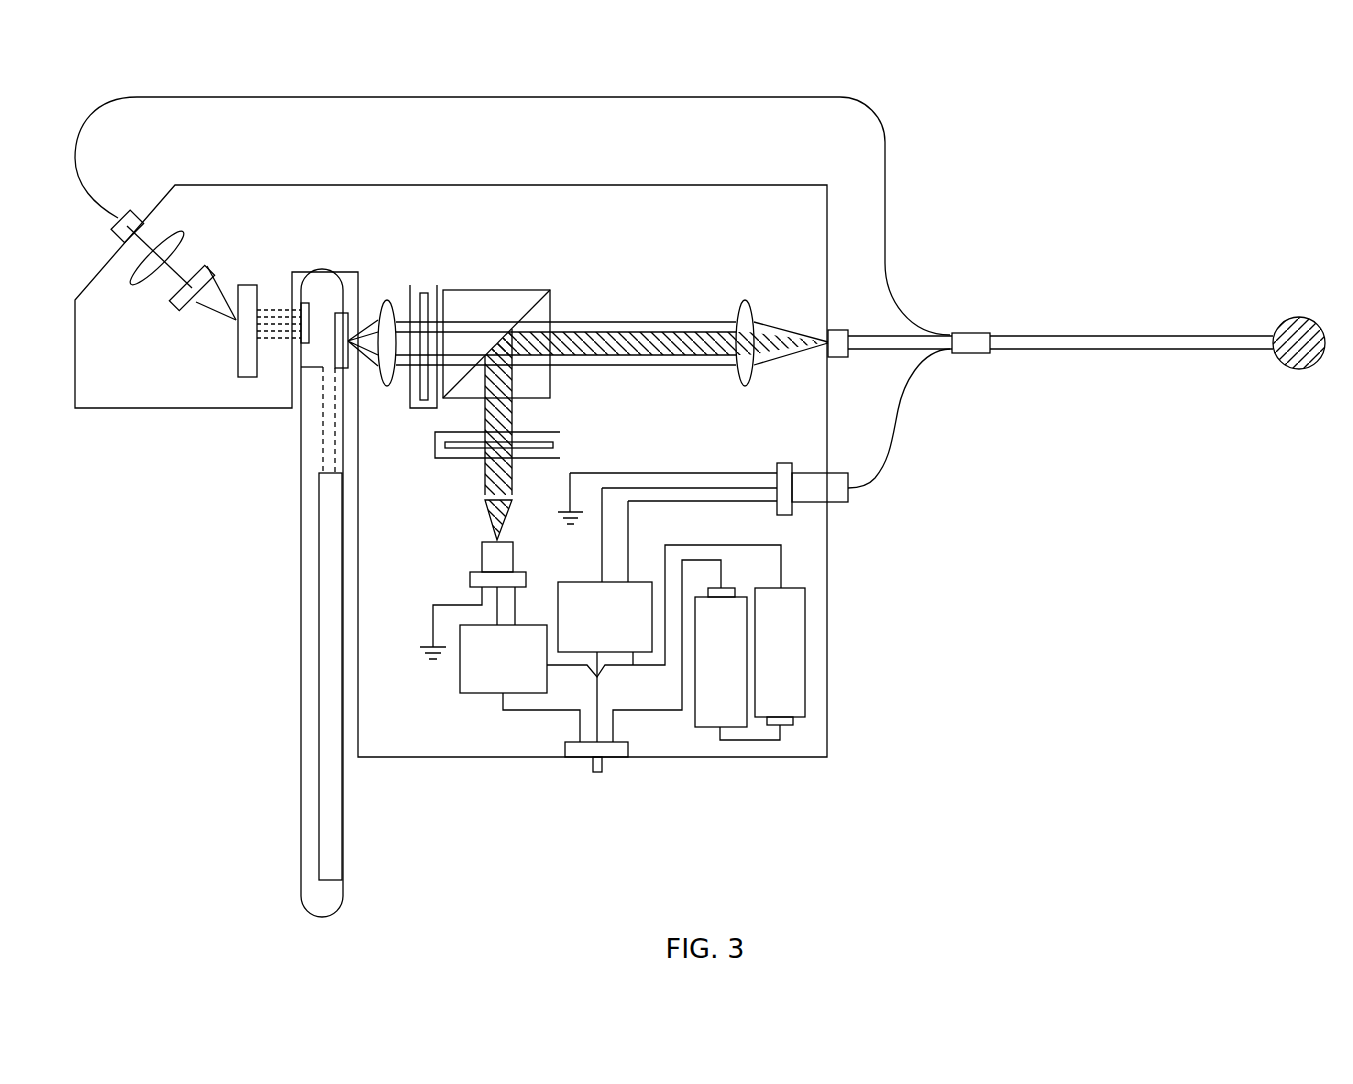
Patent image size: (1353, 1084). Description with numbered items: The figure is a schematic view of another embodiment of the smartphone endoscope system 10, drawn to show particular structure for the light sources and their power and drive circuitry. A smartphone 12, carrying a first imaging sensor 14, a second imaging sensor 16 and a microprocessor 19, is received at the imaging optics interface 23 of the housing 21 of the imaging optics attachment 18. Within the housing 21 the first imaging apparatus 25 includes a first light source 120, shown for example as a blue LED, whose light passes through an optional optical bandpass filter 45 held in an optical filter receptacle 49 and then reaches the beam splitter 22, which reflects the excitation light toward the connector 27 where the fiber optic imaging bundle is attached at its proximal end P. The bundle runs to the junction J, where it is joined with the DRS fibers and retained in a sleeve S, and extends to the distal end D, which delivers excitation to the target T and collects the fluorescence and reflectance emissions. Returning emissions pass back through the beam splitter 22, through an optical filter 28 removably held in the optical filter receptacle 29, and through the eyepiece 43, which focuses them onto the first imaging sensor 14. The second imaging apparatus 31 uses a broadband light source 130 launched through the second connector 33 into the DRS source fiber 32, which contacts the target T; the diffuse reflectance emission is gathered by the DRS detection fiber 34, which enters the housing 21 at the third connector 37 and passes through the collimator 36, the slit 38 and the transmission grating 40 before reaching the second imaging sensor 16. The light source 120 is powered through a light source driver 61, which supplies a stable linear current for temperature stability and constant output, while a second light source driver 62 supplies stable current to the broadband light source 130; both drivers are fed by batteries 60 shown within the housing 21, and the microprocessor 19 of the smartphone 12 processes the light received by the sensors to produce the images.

The smartphone endoscope system 10 is at (897, 93).
The smartphone 12 is at (302, 900).
The first imaging sensor 14 is at (343, 332).
The second imaging sensor 16 is at (305, 347).
The imaging optics attachment 18 is at (712, 758).
The microprocessor 19 is at (326, 578).
The housing 21 is at (593, 180).
The beam splitter 22 is at (533, 290).
The imaging optics interface 23 is at (337, 280).
The first imaging apparatus 25 is at (603, 403).
The connector 27 is at (833, 330).
The optical filter 28 is at (420, 288).
The optical filter receptacle 29 is at (422, 408).
The second imaging apparatus 31 is at (85, 400).
The DRS source fiber 32 is at (900, 403).
The second connector 33 is at (833, 487).
The DRS detection fiber 34 is at (887, 162).
The collimator 36 is at (183, 232).
The third connector 37 is at (132, 212).
The slit 38 is at (203, 268).
The transmission grating 40 is at (253, 285).
The eyepiece 43 is at (390, 387).
The optical bandpass filter 45 is at (553, 445).
The optical filter receptacle 49 is at (533, 432).
The battery 60 is at (788, 623).
The light source driver 61 is at (620, 658).
The light source driver 62 is at (605, 662).
The first light source 120 is at (497, 555).
The broadband light source 130 is at (798, 502).
The junction J is at (972, 332).
The sleeve S is at (1045, 335).
The distal end D is at (1272, 340).
The proximal end P is at (835, 343).
The target T is at (1297, 318).